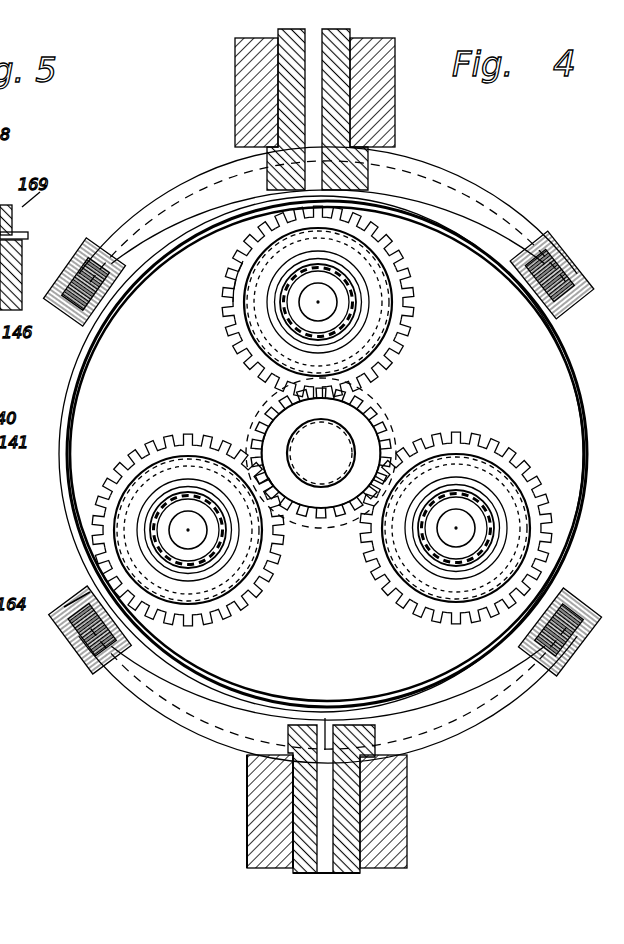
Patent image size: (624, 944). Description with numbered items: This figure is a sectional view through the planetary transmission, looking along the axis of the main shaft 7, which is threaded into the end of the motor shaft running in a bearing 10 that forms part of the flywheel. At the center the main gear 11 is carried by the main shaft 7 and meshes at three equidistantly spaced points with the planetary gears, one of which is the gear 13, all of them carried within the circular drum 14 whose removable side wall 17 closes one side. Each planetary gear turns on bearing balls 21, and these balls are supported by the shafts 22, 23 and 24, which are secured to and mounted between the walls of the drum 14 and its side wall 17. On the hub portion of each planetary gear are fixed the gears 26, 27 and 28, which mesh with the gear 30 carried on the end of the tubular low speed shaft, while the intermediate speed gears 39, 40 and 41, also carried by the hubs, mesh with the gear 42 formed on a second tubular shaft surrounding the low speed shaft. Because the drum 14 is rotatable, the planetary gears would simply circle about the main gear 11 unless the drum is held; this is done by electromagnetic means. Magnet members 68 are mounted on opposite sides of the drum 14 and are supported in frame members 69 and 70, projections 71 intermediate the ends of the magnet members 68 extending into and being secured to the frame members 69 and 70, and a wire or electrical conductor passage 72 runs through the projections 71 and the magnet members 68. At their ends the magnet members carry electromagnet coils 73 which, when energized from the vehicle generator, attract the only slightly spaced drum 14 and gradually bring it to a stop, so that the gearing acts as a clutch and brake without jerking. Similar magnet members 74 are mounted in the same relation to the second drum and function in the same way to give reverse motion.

The main shaft 7 is at (321, 453).
The bearing 10 is at (592, 368).
The main gear 11 is at (333, 494).
The gear 13 is at (405, 290).
The circular drum 14 is at (595, 430).
The side wall 17 is at (478, 482).
The bearing balls 21 is at (395, 336).
The shaft 22 is at (458, 533).
The shaft 23 is at (395, 316).
The shaft 24 is at (198, 540).
The gear 26 is at (224, 344).
The gear 27 is at (208, 560).
The gear 28 is at (500, 488).
The gear 30 is at (240, 411).
The intermediate speed gear 39 is at (242, 290).
The intermediate speed gear 40 is at (135, 478).
The intermediate speed gear 41 is at (487, 418).
The gear 42 is at (400, 406).
The magnet member 68 is at (83, 666).
The frame member 69 is at (396, 106).
The frame member 70 is at (250, 845).
The projection 71 is at (336, 57).
The electrical conductor passage 72 is at (304, 73).
The electromagnet coil 73 is at (84, 250).
The magnet member 74 is at (173, 188).